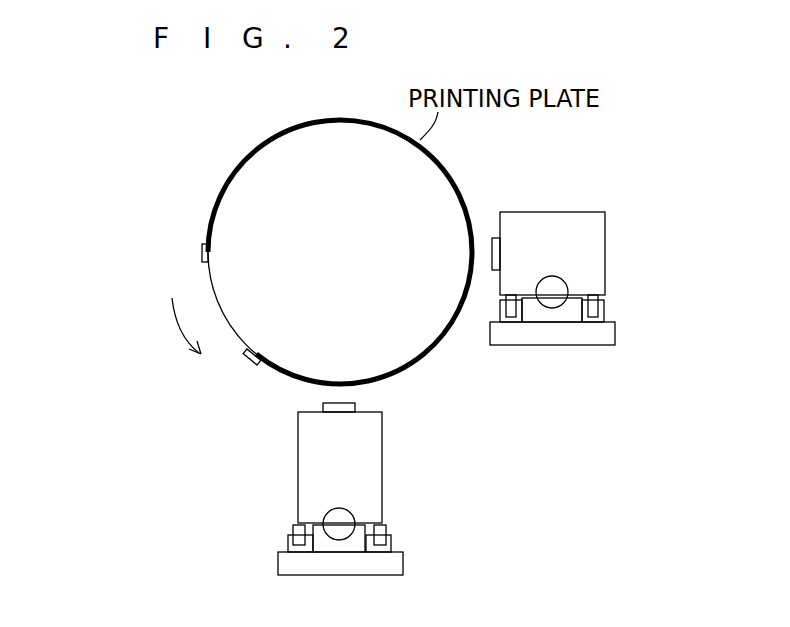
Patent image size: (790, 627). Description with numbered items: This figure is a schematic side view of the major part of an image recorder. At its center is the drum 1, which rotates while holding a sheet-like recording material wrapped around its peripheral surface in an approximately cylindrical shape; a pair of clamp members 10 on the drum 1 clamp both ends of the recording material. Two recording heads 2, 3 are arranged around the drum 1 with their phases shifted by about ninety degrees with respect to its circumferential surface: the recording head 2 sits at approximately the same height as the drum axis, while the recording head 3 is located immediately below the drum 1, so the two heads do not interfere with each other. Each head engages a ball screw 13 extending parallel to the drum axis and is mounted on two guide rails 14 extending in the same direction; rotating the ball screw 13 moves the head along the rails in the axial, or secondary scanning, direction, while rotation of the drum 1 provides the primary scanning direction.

The drum 1 is at (264, 182).
The recording head 2 is at (582, 225).
The recording head 3 is at (367, 433).
The clamp members 10 is at (201, 254).
The ball screw 13 is at (552, 290).
The guide rails 14 is at (590, 325).